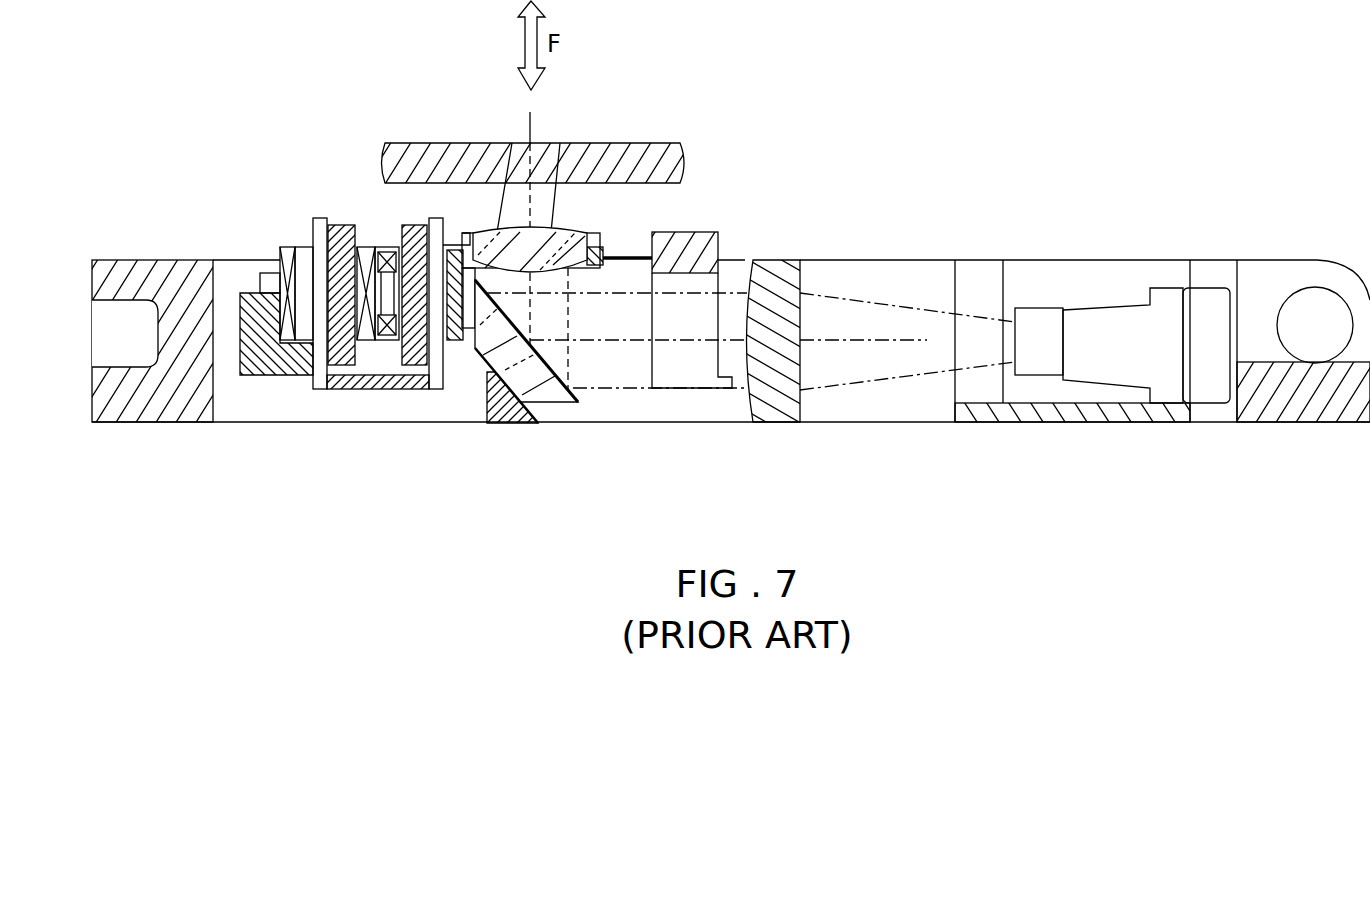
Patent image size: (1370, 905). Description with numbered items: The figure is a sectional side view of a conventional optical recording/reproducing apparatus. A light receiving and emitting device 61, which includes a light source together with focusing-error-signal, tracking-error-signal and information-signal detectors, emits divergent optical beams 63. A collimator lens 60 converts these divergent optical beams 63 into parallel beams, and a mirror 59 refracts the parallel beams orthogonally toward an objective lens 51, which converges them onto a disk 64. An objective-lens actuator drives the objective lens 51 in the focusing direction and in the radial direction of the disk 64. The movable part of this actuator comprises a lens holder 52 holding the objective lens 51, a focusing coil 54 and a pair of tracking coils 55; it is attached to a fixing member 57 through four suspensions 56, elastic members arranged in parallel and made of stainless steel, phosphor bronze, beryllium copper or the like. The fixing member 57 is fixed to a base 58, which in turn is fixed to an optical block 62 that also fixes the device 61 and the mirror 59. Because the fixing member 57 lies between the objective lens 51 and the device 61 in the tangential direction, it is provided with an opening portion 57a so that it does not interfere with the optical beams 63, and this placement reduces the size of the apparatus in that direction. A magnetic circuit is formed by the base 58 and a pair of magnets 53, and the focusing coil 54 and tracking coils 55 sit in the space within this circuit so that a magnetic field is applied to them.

The objective lens 51 is at (567, 233).
The lens holder 52 is at (265, 375).
The magnets 53 is at (417, 230).
The focusing coil 54 is at (287, 260).
The tracking coils 55 is at (380, 343).
The suspensions 56 is at (632, 258).
The fixing member 57 is at (693, 237).
The opening portion 57a is at (688, 303).
The base 58 is at (413, 380).
The mirror 59 is at (535, 368).
The collimator lens 60 is at (777, 280).
The light receiving and emitting device 61 is at (1110, 348).
The optical block 62 is at (1260, 280).
The optical beams 63 is at (873, 390).
The disk 64 is at (441, 143).